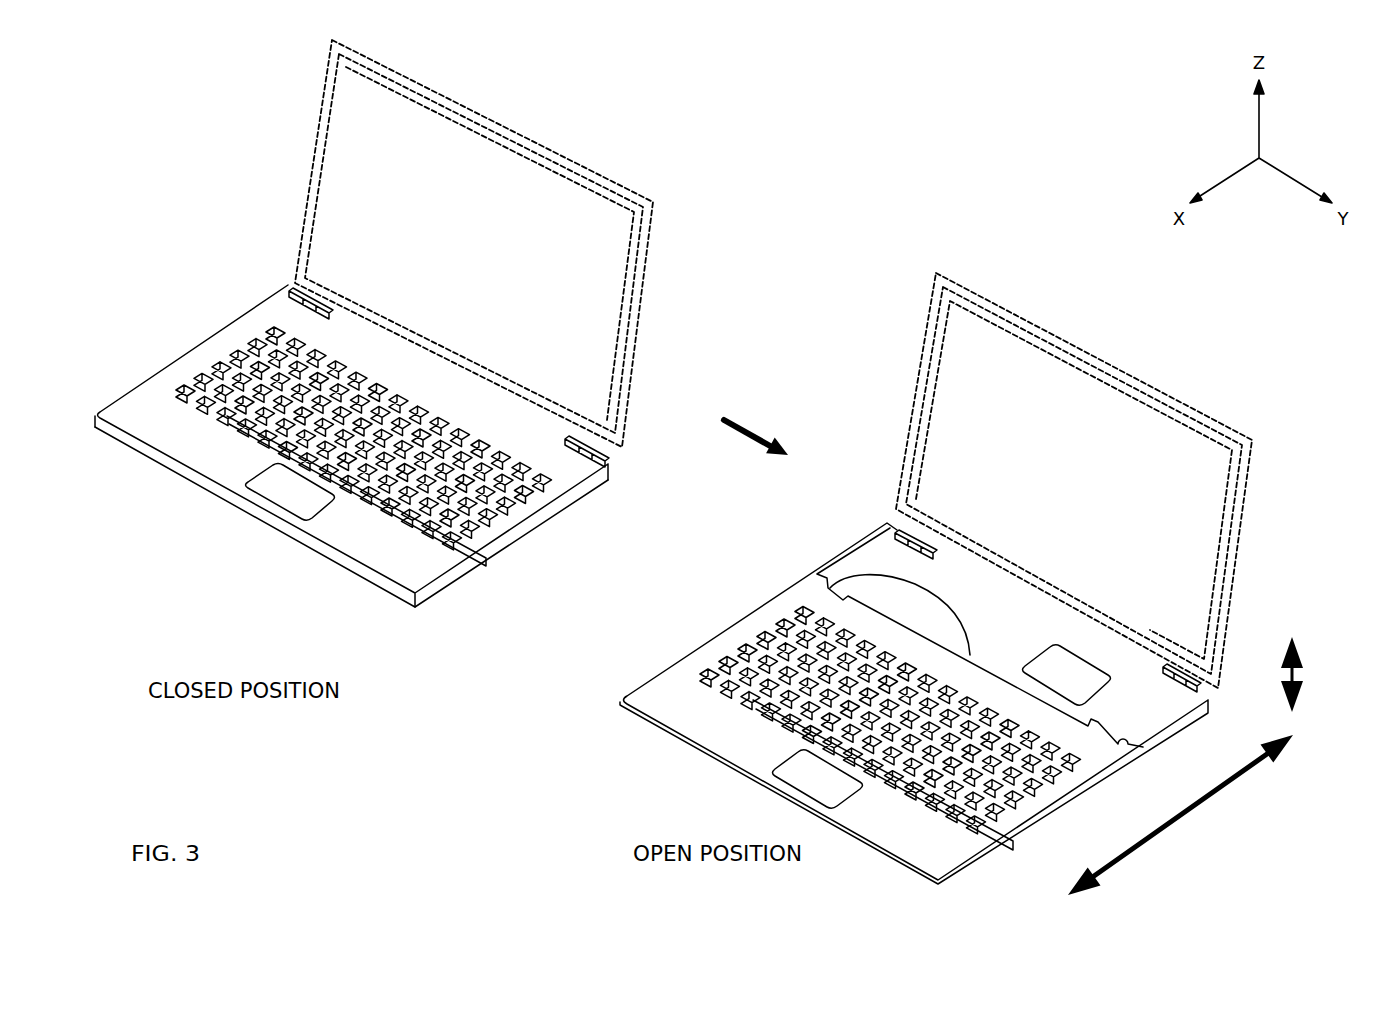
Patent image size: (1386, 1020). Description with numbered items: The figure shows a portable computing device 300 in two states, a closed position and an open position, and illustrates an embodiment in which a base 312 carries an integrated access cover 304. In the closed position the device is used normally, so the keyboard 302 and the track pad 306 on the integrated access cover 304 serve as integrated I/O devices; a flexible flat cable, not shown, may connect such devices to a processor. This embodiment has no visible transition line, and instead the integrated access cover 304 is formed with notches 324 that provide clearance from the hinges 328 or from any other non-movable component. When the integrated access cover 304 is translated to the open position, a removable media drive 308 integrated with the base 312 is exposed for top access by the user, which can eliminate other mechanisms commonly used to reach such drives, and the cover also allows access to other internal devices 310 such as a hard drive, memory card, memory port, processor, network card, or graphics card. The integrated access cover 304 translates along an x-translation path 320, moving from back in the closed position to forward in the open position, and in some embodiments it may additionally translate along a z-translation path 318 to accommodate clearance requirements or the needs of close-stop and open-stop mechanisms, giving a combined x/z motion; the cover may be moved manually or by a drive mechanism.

The portable computing device 300 is at (248, 134).
The keyboard 302 is at (237, 363).
The integrated access cover 304 is at (427, 573).
The track pad 306 is at (243, 483).
The removable media drive 308 is at (873, 574).
The internal devices 310 is at (1038, 648).
The base 312 is at (328, 563).
The z-translation path 318 is at (1303, 682).
The x-translation path 320 is at (1200, 808).
The notches 324 is at (815, 577).
The hinges 328 is at (287, 288).